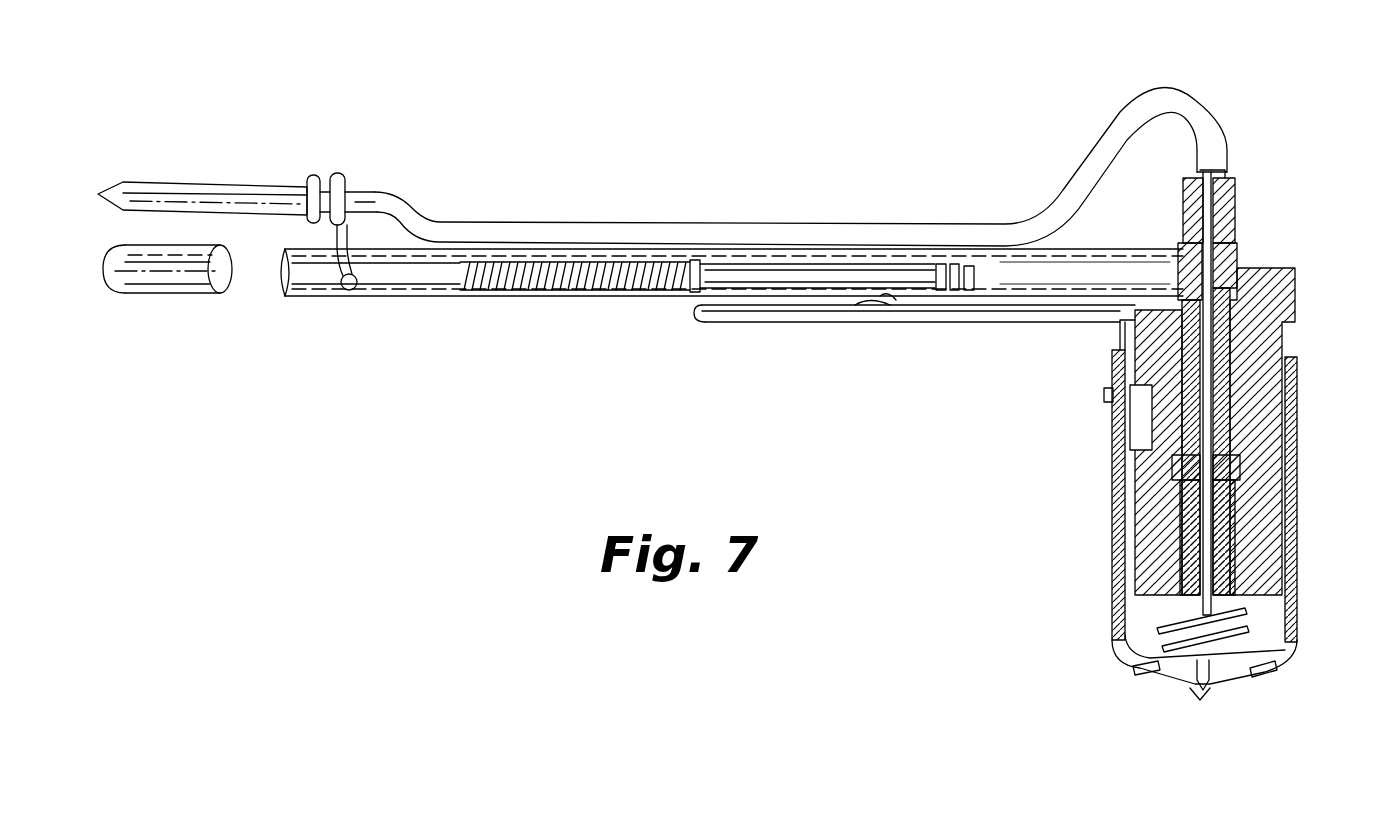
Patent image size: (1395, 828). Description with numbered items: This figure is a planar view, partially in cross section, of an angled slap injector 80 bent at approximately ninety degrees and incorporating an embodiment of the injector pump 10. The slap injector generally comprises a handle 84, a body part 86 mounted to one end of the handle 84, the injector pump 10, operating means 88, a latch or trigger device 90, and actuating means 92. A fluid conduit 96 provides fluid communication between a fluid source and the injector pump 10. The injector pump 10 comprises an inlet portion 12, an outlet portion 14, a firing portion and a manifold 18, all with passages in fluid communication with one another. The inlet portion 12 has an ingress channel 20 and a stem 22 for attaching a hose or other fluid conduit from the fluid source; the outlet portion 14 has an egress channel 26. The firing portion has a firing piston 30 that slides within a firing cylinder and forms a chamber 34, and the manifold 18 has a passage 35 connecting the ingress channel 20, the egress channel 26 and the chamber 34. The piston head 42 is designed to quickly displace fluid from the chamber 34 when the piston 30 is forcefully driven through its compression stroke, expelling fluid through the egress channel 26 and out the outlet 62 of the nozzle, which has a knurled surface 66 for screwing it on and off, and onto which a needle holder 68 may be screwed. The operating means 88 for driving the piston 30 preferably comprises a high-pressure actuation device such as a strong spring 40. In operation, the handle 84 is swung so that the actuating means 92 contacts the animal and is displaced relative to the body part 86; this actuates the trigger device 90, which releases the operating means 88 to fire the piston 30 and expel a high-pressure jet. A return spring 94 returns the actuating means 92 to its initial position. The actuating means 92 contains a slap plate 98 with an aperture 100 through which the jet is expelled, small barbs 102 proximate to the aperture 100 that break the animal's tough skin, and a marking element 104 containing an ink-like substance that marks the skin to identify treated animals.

The injector pump 10 is at (1183, 424).
The inlet portion 12 is at (1183, 206).
The outlet portion 14 is at (1286, 370).
The manifold 18 is at (1238, 266).
The ingress channel 20 is at (1212, 226).
The stem 22 is at (1222, 180).
The egress channel 26 is at (1205, 430).
The firing piston 30 is at (796, 272).
The chamber 34 is at (1036, 285).
The passage 35 is at (1196, 275).
The spring 40 is at (526, 298).
The piston head 42 is at (985, 264).
The outlet 62 is at (1200, 618).
The knurled surface 66 is at (1235, 470).
The needle holder 68 is at (1235, 555).
The angled slap injector 80 is at (700, 112).
The handle 84 is at (190, 330).
The body part 86 is at (1300, 330).
The operating means 88 is at (620, 330).
The trigger device 90 is at (866, 340).
The actuating means 92 is at (1155, 662).
The spring 94 is at (1288, 652).
The fluid conduit 96 is at (690, 222).
The slap plate 98 is at (1180, 680).
The aperture 100 is at (1202, 688).
The barbs 102 is at (1210, 682).
The marking element 104 is at (1140, 675).